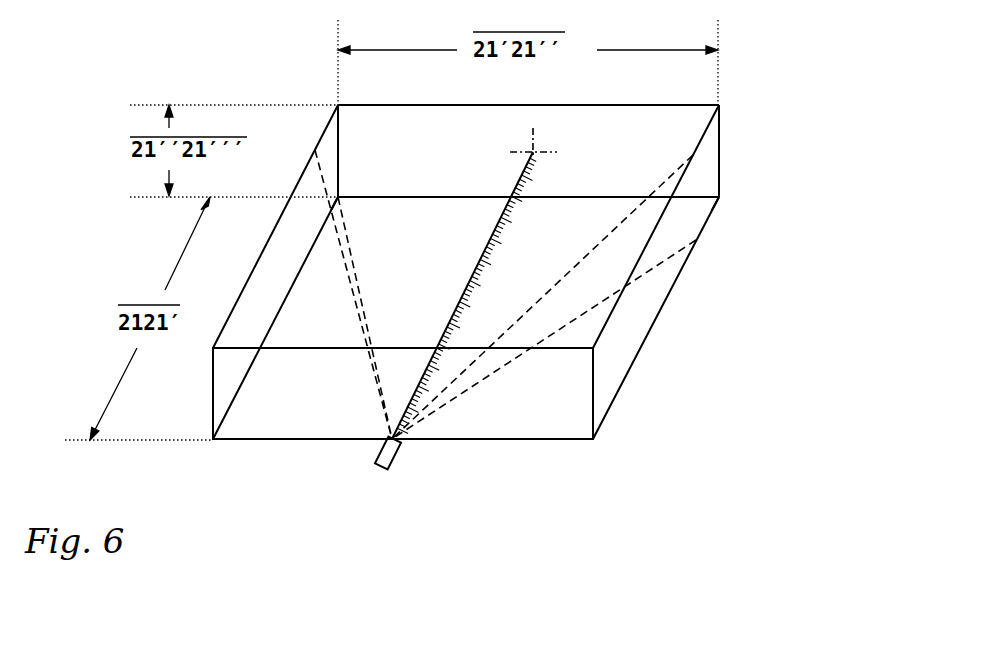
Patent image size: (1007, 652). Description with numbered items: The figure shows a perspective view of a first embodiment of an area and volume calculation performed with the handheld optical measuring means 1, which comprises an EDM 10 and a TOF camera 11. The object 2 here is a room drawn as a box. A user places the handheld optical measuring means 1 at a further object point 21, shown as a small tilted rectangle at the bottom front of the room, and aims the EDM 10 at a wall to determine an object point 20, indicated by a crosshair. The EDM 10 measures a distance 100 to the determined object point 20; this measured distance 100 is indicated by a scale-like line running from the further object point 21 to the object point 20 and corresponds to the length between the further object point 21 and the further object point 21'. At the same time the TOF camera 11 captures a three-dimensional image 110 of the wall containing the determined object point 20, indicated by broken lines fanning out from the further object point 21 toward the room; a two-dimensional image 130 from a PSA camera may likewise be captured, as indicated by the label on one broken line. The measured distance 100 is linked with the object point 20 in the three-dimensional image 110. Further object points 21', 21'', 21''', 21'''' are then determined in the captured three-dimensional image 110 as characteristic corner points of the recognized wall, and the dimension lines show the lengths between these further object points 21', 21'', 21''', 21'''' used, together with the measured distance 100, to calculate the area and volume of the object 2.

The handheld optical measuring means 1 is at (453, 293).
The EDM 10 is at (453, 293).
The TOF camera 11 is at (374, 462).
The object 2 is at (672, 292).
The object point 20 is at (536, 150).
The further object point 21 is at (425, 457).
The further object point 21' is at (383, 213).
The further object point 21'' is at (781, 179).
The further object point 21''' is at (776, 130).
The further object point 21'''' is at (274, 129).
The measured distance 100 is at (467, 287).
The 3D image 110 is at (593, 339).
The 2D image 130 is at (592, 310).